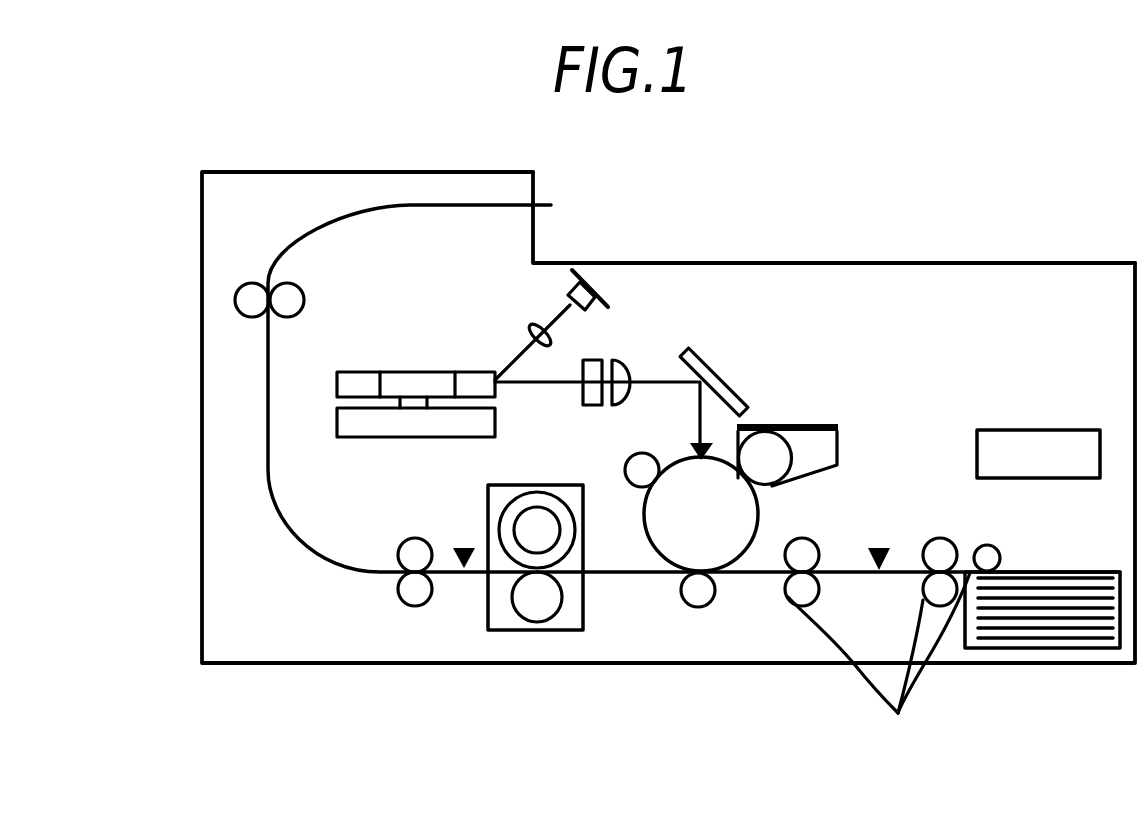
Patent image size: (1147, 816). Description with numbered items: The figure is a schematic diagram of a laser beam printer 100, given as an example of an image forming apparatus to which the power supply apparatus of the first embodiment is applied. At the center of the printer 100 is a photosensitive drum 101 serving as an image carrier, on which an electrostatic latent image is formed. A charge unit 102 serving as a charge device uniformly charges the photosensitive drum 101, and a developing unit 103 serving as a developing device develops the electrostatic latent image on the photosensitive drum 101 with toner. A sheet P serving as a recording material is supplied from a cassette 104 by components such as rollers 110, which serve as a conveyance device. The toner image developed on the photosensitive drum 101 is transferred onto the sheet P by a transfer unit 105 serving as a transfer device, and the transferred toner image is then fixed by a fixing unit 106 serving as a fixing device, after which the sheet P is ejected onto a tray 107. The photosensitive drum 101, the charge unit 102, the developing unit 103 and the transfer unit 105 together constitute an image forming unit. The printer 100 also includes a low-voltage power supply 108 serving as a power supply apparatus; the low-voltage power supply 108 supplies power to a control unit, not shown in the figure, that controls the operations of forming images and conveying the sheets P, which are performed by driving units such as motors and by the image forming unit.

The laser beam printer 100 is at (668, 665).
The photosensitive drum 101 is at (644, 513).
The charge unit 102 is at (631, 468).
The developing unit 103 is at (839, 433).
The cassette 104 is at (1102, 552).
The transfer unit 105 is at (691, 605).
The fixing unit 106 is at (484, 612).
The tray 107 is at (694, 263).
The low-voltage power supply 108 is at (1030, 426).
The rollers 110 is at (879, 665).
The sheet P is at (993, 630).